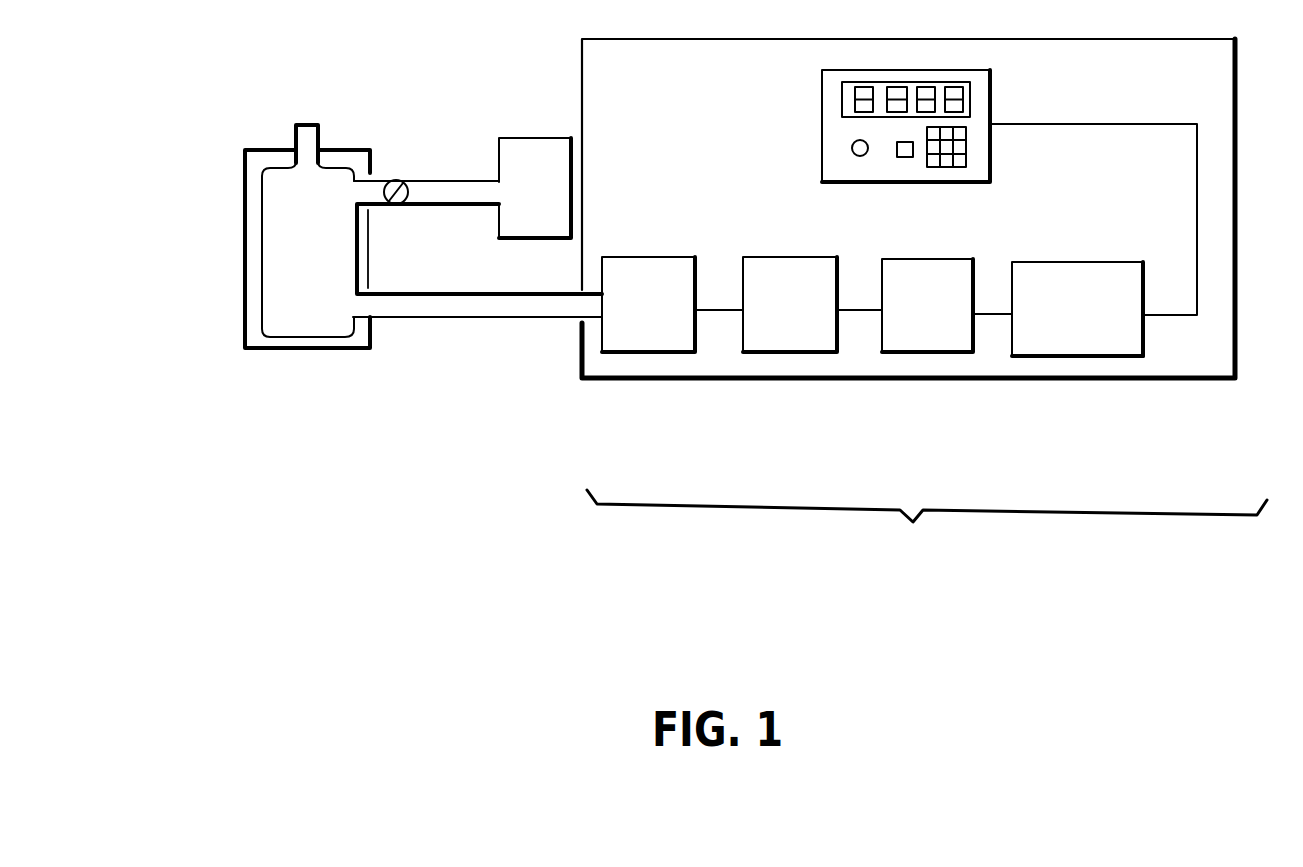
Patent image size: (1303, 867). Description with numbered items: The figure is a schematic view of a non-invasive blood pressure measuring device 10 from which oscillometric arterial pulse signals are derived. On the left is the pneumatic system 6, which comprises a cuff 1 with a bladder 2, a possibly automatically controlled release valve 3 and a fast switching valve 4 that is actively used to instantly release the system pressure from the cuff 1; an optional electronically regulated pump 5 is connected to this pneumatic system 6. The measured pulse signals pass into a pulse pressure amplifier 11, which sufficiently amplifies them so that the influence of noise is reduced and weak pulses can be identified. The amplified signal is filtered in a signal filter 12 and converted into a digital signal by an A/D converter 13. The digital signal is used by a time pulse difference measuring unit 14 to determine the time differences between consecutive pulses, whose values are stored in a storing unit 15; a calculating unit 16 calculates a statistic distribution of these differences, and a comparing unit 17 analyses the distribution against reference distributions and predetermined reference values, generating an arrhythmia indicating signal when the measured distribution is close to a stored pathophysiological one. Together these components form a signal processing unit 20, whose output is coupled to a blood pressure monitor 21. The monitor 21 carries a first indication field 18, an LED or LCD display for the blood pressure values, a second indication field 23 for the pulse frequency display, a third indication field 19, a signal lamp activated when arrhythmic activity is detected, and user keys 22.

The cuff 1 is at (248, 233).
The bladder 2 is at (272, 306).
The release valve 3 is at (396, 180).
The fast switching valve 4 is at (298, 136).
The electronically regulated pump 5 is at (537, 147).
The pneumatic system 6 is at (450, 188).
The non-invasive blood pressure measuring device 10 is at (440, 497).
The pulse pressure amplifier 11 is at (643, 343).
The signal filter 12 is at (797, 337).
The A/D converter 13 is at (930, 340).
The time pulse difference measuring unit 14 is at (1028, 343).
The storing unit 15 is at (1056, 343).
The calculating unit 16 is at (1087, 343).
The comparing unit 17 is at (1113, 342).
The first indication field 18 is at (857, 100).
The third indication field 19 is at (862, 156).
The signal processing unit 20 is at (927, 529).
The blood pressure monitor 21 is at (1213, 384).
The user keys 22 is at (958, 162).
The second indication field 23 is at (904, 162).